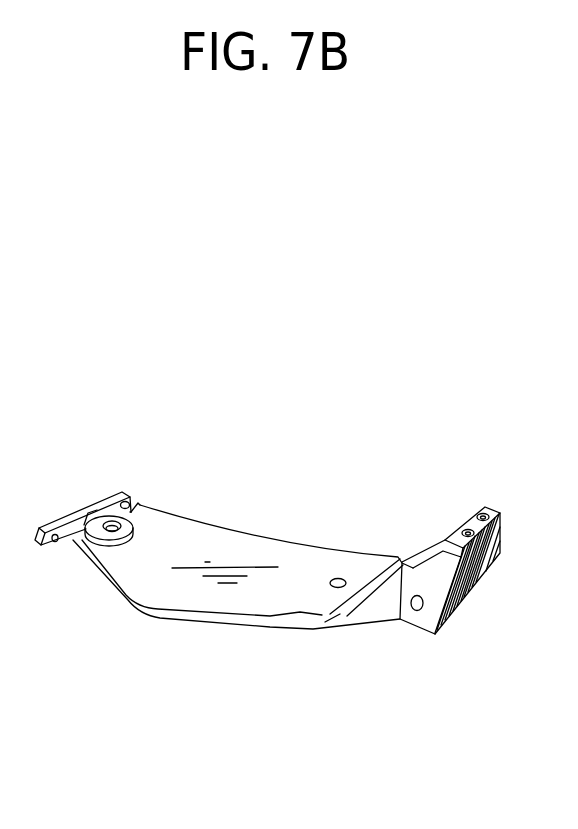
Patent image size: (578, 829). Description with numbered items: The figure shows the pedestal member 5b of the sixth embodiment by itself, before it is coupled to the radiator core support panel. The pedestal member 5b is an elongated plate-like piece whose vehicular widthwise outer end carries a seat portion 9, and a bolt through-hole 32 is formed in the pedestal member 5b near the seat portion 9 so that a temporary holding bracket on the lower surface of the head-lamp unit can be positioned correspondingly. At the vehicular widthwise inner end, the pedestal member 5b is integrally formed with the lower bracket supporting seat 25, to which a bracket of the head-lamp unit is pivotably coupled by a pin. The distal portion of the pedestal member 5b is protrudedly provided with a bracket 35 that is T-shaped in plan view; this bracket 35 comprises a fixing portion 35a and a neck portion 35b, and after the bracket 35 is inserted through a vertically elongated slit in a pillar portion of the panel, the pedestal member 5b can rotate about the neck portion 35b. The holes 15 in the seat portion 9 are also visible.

The pedestal member 5b is at (238, 525).
The seat portion 9 is at (465, 597).
The holes 15 is at (465, 531).
The bracket supporting seat 25 is at (136, 510).
The bolt through-hole 32 is at (347, 581).
The bracket 35 is at (92, 435).
The fixing portion 35a is at (60, 527).
The neck portion 35b is at (100, 514).